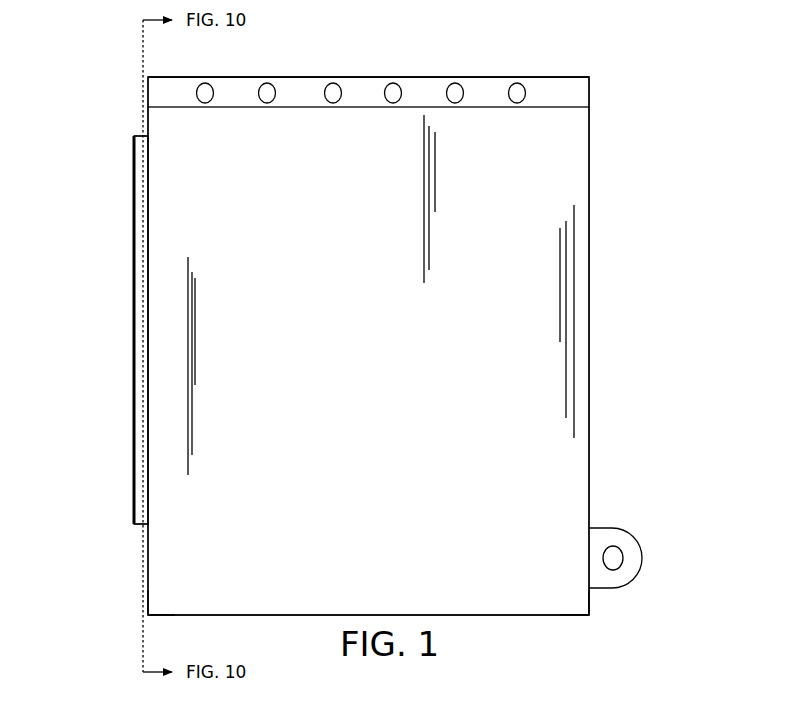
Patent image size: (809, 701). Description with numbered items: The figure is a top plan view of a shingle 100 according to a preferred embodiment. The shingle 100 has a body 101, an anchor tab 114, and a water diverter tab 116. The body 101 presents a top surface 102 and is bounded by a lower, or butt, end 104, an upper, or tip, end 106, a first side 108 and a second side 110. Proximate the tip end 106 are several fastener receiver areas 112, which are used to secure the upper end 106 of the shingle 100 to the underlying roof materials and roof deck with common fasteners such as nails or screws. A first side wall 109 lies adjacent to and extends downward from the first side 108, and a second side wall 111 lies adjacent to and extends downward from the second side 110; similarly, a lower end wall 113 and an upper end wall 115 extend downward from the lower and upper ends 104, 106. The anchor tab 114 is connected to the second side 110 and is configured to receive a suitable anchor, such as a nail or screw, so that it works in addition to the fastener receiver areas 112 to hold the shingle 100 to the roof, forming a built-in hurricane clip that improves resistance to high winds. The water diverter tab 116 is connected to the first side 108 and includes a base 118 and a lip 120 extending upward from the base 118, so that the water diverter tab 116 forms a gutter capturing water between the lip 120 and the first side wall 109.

The shingle 100 is at (660, 349).
The body 101 is at (227, 243).
The top surface 102 is at (188, 168).
The lower end 104 is at (512, 620).
The upper end 106 is at (562, 73).
The first side 108 is at (147, 574).
The first side wall 109 is at (148, 604).
The second side 110 is at (591, 467).
The second side wall 111 is at (589, 232).
The fastener receiver areas 112 is at (517, 90).
The lower end wall 113 is at (548, 618).
The anchor tab 114 is at (630, 553).
The upper end wall 115 is at (477, 77).
The water diverter tab 116 is at (117, 402).
The base 118 is at (143, 512).
The lip 120 is at (133, 355).